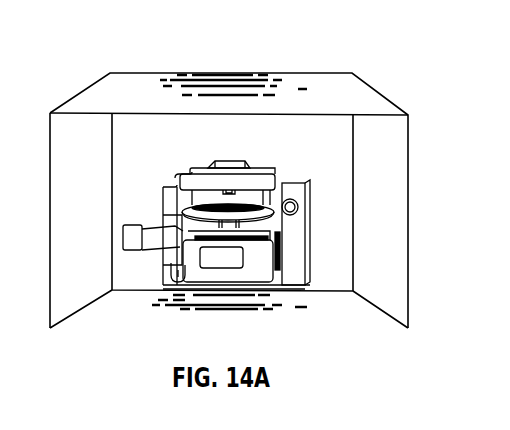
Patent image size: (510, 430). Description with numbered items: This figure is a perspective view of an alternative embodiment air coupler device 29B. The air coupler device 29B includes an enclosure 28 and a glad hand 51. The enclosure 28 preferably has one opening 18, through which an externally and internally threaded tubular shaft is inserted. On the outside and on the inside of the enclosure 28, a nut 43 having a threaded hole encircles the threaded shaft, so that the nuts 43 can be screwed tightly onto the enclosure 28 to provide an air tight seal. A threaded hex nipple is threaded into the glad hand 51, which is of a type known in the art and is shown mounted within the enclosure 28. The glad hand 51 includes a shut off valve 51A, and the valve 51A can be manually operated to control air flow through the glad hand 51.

The enclosure 28 is at (378, 93).
The air coupler device 29B is at (352, 74).
The nut 43 is at (197, 171).
The opening 18 is at (242, 160).
The glad hand 51 is at (270, 253).
The shut off valve 51A is at (152, 237).